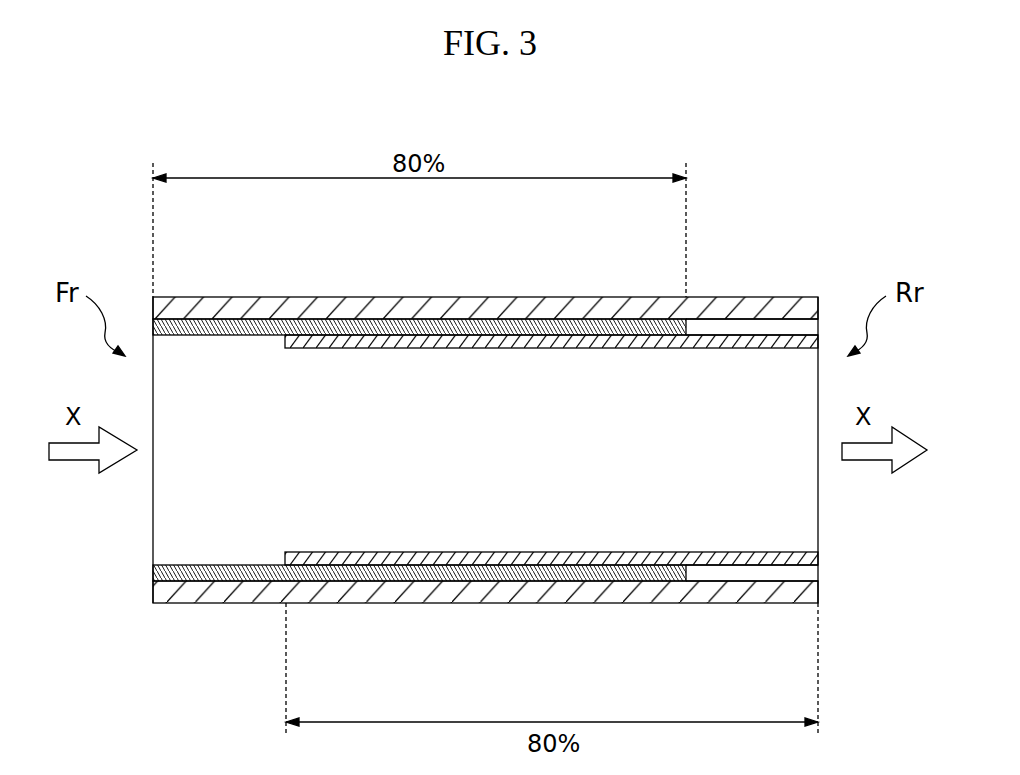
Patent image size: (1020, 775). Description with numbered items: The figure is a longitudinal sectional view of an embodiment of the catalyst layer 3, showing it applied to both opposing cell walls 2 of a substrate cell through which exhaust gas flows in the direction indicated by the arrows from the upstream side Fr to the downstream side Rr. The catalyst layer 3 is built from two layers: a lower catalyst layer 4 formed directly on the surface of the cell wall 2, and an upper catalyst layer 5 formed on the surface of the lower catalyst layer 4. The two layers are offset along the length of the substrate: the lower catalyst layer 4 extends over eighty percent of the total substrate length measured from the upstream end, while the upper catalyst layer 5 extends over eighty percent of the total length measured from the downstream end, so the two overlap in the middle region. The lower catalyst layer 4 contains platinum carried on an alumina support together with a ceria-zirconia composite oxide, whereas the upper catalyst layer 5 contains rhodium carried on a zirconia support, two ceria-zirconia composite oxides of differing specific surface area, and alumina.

The cell wall 2 is at (765, 314).
The catalyst layer 3 is at (485, 452).
The lower catalyst layer 4 is at (467, 326).
The upper catalyst layer 5 is at (512, 341).